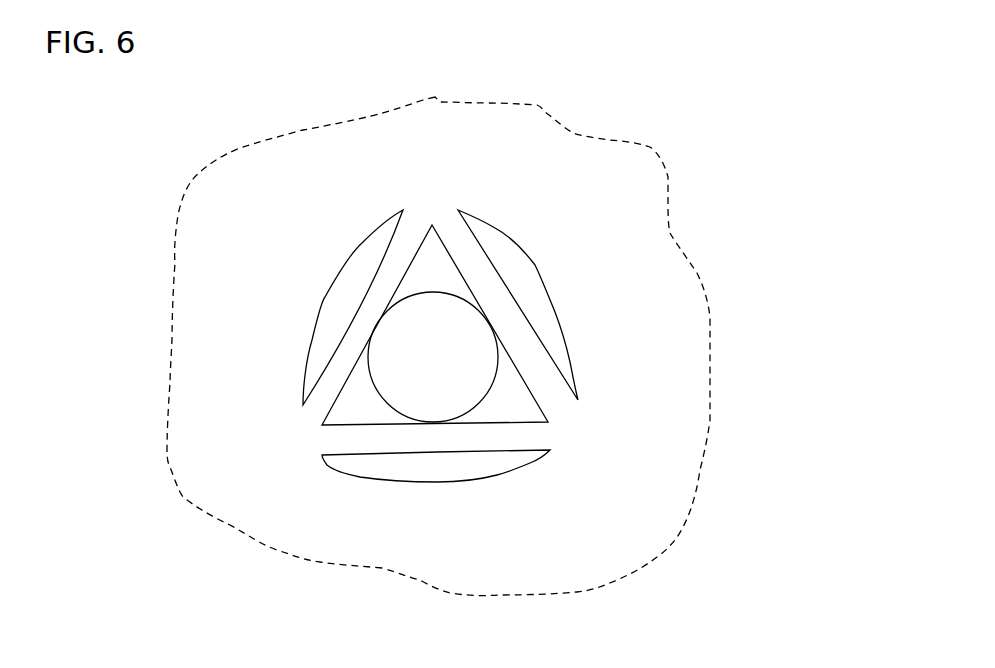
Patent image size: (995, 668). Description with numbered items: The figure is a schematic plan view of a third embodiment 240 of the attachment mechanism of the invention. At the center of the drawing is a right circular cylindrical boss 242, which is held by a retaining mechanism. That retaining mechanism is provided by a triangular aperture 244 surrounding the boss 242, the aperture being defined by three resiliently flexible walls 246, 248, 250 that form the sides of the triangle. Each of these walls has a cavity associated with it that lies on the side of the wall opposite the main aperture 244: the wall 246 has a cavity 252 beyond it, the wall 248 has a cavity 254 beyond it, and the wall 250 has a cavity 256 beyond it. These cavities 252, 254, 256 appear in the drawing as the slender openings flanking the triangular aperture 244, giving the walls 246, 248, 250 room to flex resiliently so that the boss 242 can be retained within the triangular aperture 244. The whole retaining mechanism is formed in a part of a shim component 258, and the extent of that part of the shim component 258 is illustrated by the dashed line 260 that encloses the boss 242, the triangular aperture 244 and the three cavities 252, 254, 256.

The third embodiment 240 is at (687, 98).
The right circular cylindrical boss 242 is at (455, 390).
The triangular aperture 244 is at (432, 262).
The resiliently flexible wall 246 is at (548, 392).
The resiliently flexible wall 248 is at (332, 447).
The resiliently flexible wall 250 is at (415, 222).
The cavity 252 is at (530, 293).
The cavity 254 is at (437, 470).
The cavity 256 is at (347, 300).
The shim component 258 is at (663, 346).
The dashed line 260 is at (710, 370).